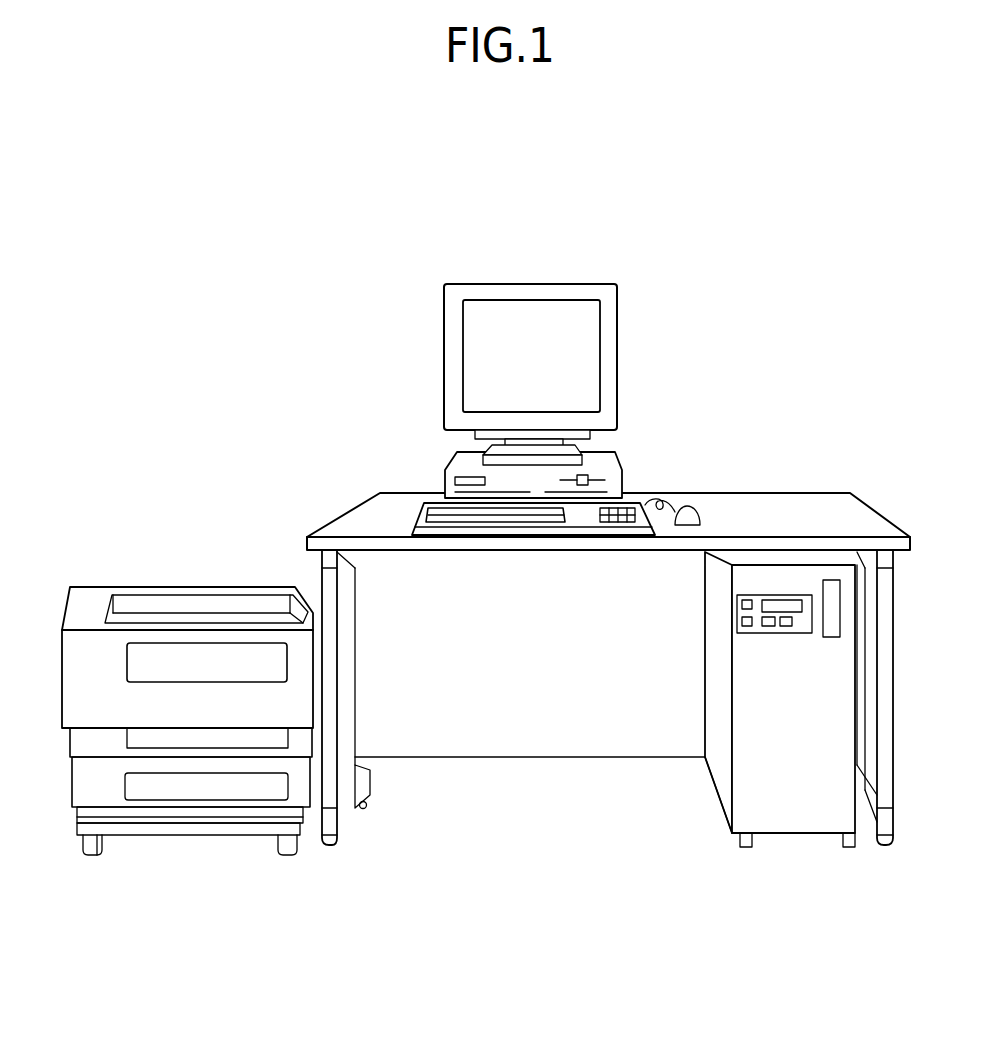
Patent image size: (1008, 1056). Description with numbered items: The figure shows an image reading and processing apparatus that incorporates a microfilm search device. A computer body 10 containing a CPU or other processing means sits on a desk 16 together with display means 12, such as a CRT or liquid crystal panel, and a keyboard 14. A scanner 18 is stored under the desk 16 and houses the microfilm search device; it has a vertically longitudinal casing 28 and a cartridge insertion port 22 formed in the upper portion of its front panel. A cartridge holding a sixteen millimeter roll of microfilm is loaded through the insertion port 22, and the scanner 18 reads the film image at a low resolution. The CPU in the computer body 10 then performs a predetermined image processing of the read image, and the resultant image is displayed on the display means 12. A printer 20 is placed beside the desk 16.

The computer body 10 is at (620, 462).
The display means 12 is at (618, 337).
The keyboard 14 is at (420, 517).
The desk 16 is at (789, 493).
The scanner 18 is at (735, 740).
The printer 20 is at (175, 587).
The cartridge insertion port 22 is at (830, 637).
The casing 28 is at (723, 792).